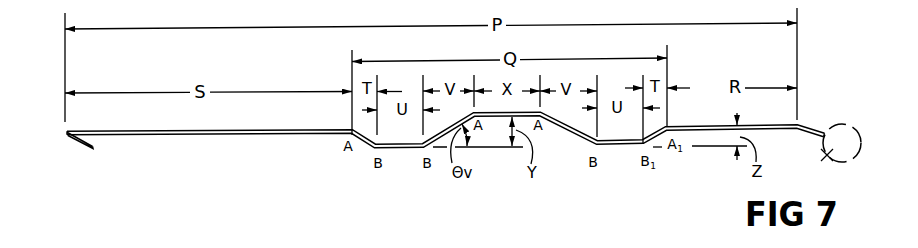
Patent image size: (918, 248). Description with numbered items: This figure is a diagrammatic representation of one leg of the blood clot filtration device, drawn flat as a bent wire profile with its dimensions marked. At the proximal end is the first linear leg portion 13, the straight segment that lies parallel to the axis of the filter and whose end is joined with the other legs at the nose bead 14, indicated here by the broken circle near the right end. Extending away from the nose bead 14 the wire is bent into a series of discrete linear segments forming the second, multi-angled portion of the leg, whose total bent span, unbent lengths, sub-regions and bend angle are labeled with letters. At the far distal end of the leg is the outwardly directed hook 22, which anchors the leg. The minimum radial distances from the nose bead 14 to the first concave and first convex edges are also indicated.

The first linear leg portion 13 is at (813, 128).
The nose bead 14 is at (818, 164).
The hook 22 is at (85, 150).